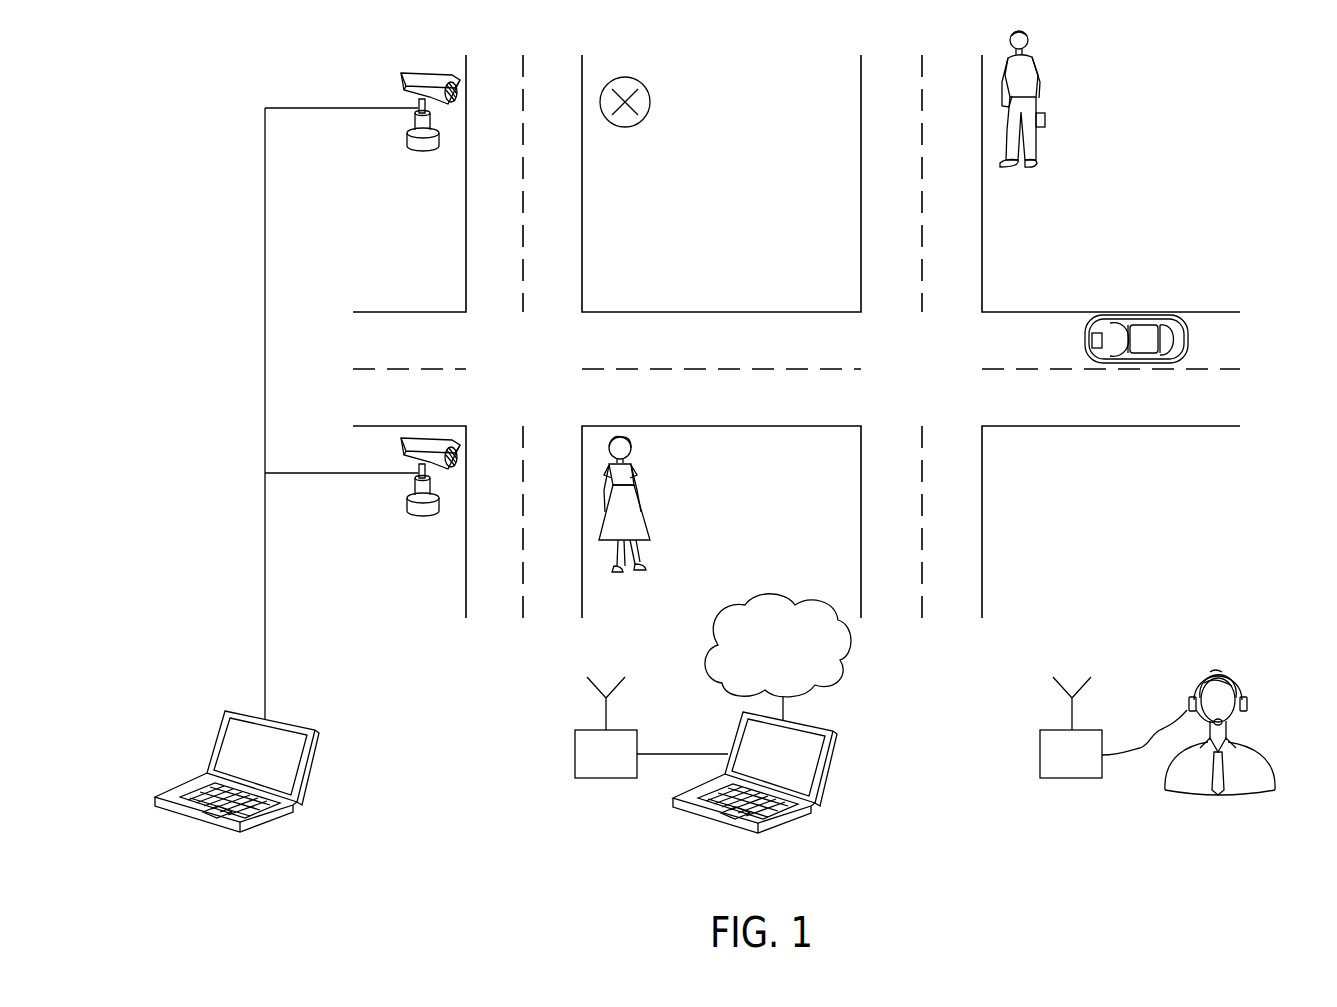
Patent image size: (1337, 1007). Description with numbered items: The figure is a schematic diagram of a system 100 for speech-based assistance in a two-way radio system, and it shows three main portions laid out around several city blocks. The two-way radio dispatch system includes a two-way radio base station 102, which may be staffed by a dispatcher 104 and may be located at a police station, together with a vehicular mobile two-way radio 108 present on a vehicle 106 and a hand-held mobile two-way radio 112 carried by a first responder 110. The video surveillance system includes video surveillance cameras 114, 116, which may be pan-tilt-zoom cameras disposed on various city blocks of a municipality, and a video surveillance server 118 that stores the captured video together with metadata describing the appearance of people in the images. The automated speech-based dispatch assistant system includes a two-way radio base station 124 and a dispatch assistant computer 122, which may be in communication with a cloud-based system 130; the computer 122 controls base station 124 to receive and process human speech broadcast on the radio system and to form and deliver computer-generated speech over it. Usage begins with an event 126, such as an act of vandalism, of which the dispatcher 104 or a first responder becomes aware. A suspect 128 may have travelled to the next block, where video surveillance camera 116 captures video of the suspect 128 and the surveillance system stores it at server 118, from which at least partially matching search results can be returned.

The system 100 is at (493, 835).
The two-way radio base station 102 is at (1040, 756).
The dispatcher 104 is at (1253, 742).
The vehicle 106 is at (1122, 316).
The vehicular mobile two-way radio 108 is at (1092, 340).
The first responder 110 is at (1048, 80).
The hand-held mobile two-way radio 112 is at (1046, 120).
The video surveillance camera 114 is at (406, 136).
The video surveillance camera 116 is at (406, 501).
The video surveillance server 118 is at (307, 771).
The dispatch assistant computer 122 is at (825, 771).
The two-way radio base station 124 is at (575, 756).
The event 126 is at (651, 101).
The suspect 128 is at (657, 505).
The cloud-based system 130 is at (847, 662).